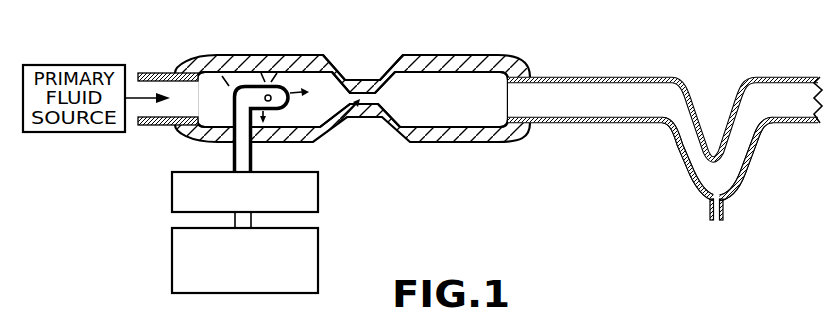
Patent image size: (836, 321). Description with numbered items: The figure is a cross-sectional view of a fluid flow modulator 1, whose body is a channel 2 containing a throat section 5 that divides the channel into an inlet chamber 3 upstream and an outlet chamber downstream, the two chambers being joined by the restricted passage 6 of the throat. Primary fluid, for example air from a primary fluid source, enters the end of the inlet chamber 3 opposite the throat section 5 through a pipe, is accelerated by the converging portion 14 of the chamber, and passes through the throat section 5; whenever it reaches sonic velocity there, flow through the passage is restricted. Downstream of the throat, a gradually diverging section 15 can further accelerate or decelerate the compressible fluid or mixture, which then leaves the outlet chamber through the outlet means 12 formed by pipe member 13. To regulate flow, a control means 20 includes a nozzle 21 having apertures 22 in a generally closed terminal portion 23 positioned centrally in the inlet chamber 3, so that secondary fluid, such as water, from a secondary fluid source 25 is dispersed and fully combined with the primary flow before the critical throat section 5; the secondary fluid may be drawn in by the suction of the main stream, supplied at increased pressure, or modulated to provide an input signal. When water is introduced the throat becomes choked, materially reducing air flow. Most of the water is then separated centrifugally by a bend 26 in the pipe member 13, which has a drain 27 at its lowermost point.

The fluid flow modulator 1 is at (350, 202).
The channel 2 is at (283, 54).
The inlet chamber 3 is at (316, 103).
The throat section 5 is at (366, 79).
The restricted passage 6 is at (357, 100).
The outlet means 12 is at (572, 63).
The pipe member 13 is at (553, 126).
The converging portion 14 is at (338, 63).
The diverging section 15 is at (397, 136).
The control means 20 is at (231, 153).
The nozzle 21 is at (253, 156).
The apertures 22 is at (285, 110).
The terminal portion 23 is at (245, 38).
The secondary fluid source 25 is at (172, 260).
The bend 26 is at (745, 183).
The drain 27 is at (715, 223).